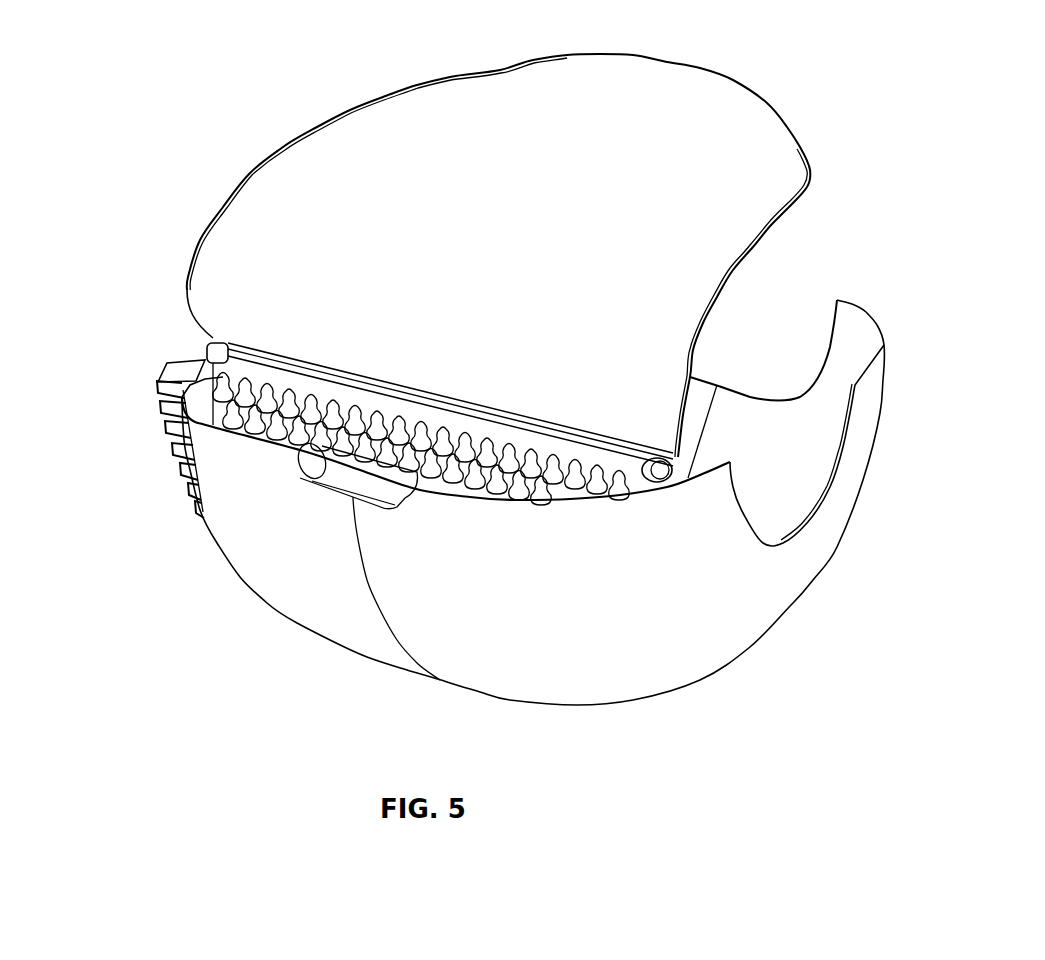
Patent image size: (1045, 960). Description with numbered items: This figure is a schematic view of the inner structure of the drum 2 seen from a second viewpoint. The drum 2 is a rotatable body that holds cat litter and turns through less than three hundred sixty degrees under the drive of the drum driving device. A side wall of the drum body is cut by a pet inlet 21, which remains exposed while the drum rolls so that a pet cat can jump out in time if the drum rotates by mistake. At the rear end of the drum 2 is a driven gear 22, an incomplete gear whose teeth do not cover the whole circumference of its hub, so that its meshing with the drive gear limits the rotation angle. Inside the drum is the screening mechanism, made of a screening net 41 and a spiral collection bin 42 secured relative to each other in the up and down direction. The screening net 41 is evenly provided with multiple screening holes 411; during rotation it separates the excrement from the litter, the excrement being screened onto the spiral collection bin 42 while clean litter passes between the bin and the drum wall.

The drum 2 is at (298, 562).
The pet inlet 21 is at (778, 312).
The driven gear 22 is at (167, 435).
The screening net 41 is at (267, 373).
The screening holes 411 is at (262, 440).
The spiral collection bin 42 is at (510, 172).